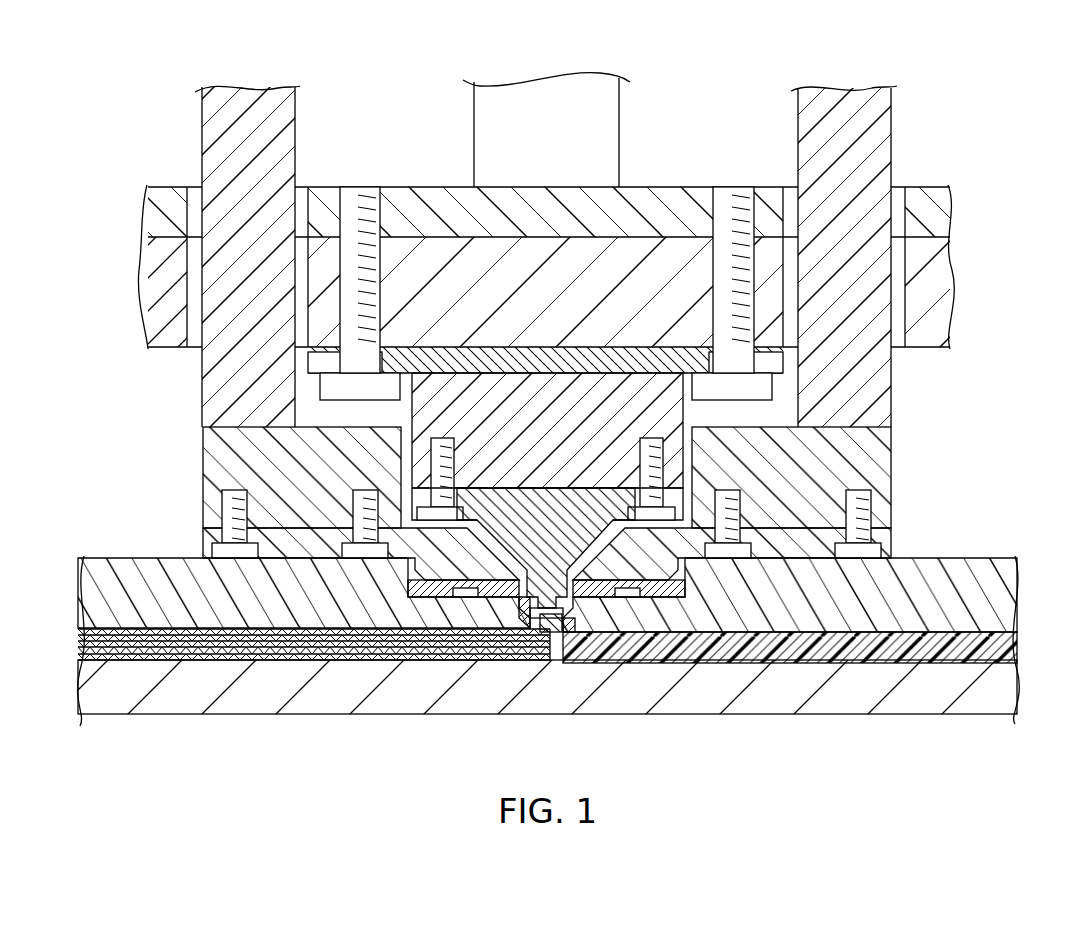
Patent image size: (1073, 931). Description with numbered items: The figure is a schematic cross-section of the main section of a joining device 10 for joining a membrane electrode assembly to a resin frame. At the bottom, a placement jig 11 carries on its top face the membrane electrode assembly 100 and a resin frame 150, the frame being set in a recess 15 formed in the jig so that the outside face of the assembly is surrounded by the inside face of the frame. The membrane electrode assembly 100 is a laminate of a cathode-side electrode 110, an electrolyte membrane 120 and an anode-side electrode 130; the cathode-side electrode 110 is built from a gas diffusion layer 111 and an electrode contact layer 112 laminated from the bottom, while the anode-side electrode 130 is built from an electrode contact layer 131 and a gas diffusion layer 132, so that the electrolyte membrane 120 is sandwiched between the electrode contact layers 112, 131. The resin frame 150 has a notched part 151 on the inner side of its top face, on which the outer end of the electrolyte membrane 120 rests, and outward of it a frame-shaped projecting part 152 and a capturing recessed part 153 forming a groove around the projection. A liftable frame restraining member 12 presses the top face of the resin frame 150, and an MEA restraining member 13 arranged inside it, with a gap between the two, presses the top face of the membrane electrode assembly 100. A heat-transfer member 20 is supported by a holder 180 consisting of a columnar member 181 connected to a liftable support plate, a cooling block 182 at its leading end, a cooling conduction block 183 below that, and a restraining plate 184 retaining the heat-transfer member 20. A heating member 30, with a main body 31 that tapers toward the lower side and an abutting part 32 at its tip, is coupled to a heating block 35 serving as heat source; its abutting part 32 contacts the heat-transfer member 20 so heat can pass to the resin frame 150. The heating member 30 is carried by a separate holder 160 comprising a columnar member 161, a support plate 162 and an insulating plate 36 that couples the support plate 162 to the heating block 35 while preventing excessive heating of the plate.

The joining device 10 is at (998, 118).
The placement jig 11 is at (395, 693).
The frame restraining member 12 is at (968, 568).
The MEA restraining member 13 is at (167, 562).
The recess 15 is at (830, 652).
The heat-transfer member 20 is at (612, 618).
The heating member 30 is at (718, 371).
The main body 31 is at (577, 500).
The abutting part 32 is at (557, 604).
The heating block 35 is at (650, 400).
The insulating plate 36 is at (418, 252).
The membrane electrode assembly 100 is at (539, 639).
The cathode-side electrode 110 is at (314, 732).
The gas diffusion layer 111 is at (282, 653).
The electrode contact layer 112 is at (330, 657).
The electrolyte membrane 120 is at (225, 648).
The anode-side electrode 130 is at (306, 560).
The electrode contact layer 131 is at (92, 640).
The gas diffusion layer 132 is at (135, 652).
The resin frame 150 is at (756, 685).
The notched part 151 is at (520, 612).
The projecting part 152 is at (552, 624).
The capturing recessed part 153 is at (598, 630).
The holder 160 is at (549, 130).
The columnar member 161 is at (478, 103).
The support plate 162 is at (733, 200).
The holder 180 is at (893, 125).
The columnar member 181 is at (222, 126).
The cooling block 182 is at (210, 438).
The cooling conduction block 183 is at (205, 533).
The restraining plate 184 is at (440, 590).